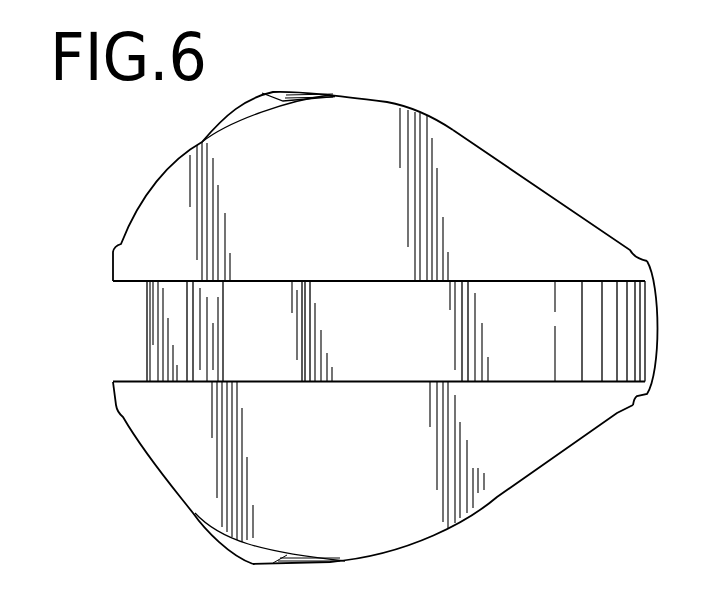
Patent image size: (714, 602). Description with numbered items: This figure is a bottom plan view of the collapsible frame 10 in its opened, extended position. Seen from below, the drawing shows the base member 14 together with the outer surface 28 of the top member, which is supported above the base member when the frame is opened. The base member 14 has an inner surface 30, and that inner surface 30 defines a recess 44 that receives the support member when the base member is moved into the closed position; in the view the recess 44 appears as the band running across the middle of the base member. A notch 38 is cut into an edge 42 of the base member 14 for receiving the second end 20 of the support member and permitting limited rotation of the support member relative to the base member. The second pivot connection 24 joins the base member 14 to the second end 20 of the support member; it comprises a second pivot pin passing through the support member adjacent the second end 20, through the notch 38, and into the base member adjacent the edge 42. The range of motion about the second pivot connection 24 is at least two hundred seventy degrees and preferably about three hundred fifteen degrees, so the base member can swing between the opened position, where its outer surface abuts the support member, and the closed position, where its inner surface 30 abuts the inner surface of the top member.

The collapsible frame 10 is at (166, 149).
The base member 14 is at (590, 440).
The second end 20 is at (147, 360).
The second pivot connection 24 is at (117, 335).
The outer surface 28 is at (253, 108).
The inner surface 30 is at (330, 213).
The notch 38 is at (129, 290).
The edge 42 is at (513, 168).
The recess 44 is at (402, 353).